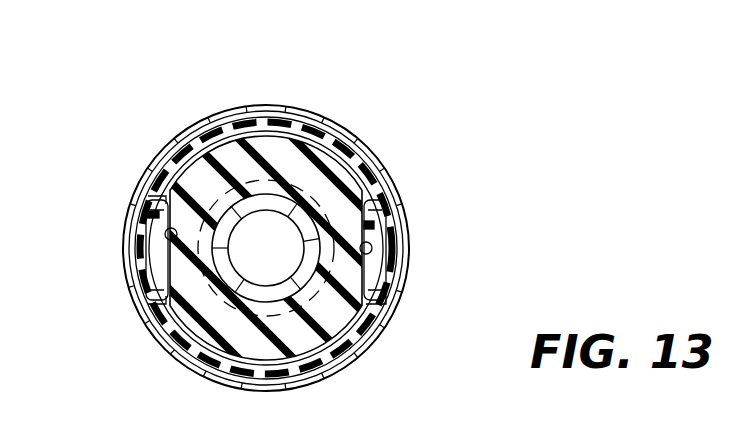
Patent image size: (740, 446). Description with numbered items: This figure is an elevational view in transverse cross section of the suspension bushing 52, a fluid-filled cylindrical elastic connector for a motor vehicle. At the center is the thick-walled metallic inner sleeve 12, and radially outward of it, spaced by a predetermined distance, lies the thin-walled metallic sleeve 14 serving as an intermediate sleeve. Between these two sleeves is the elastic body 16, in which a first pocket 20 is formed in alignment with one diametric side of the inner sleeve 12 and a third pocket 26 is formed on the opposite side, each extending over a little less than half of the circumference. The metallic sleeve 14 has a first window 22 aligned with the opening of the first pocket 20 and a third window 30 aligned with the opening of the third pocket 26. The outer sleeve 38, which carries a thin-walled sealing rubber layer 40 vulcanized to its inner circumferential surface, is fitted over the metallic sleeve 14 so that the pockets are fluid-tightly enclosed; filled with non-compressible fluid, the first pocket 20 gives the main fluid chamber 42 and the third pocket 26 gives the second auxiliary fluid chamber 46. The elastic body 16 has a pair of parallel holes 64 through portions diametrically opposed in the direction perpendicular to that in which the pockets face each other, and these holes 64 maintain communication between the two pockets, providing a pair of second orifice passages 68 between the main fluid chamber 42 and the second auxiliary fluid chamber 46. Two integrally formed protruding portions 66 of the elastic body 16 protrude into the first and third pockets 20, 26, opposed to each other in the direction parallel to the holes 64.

The inner sleeve 12 is at (336, 322).
The metallic sleeve 14 is at (385, 237).
The elastic body 16 is at (162, 233).
The first pocket 20 is at (376, 212).
The first window 22 is at (152, 218).
The third pocket 26 is at (390, 305).
The third window 30 is at (152, 312).
The outer sleeve 38 is at (318, 120).
The sealing rubber layer 40 is at (296, 372).
The main fluid chamber 42 is at (277, 128).
The second auxiliary fluid chamber 46 is at (248, 370).
The suspension bushing 52 is at (418, 92).
The holes 64 is at (152, 238).
The protruding portions 66 is at (229, 156).
The second orifice passages 68 is at (148, 255).